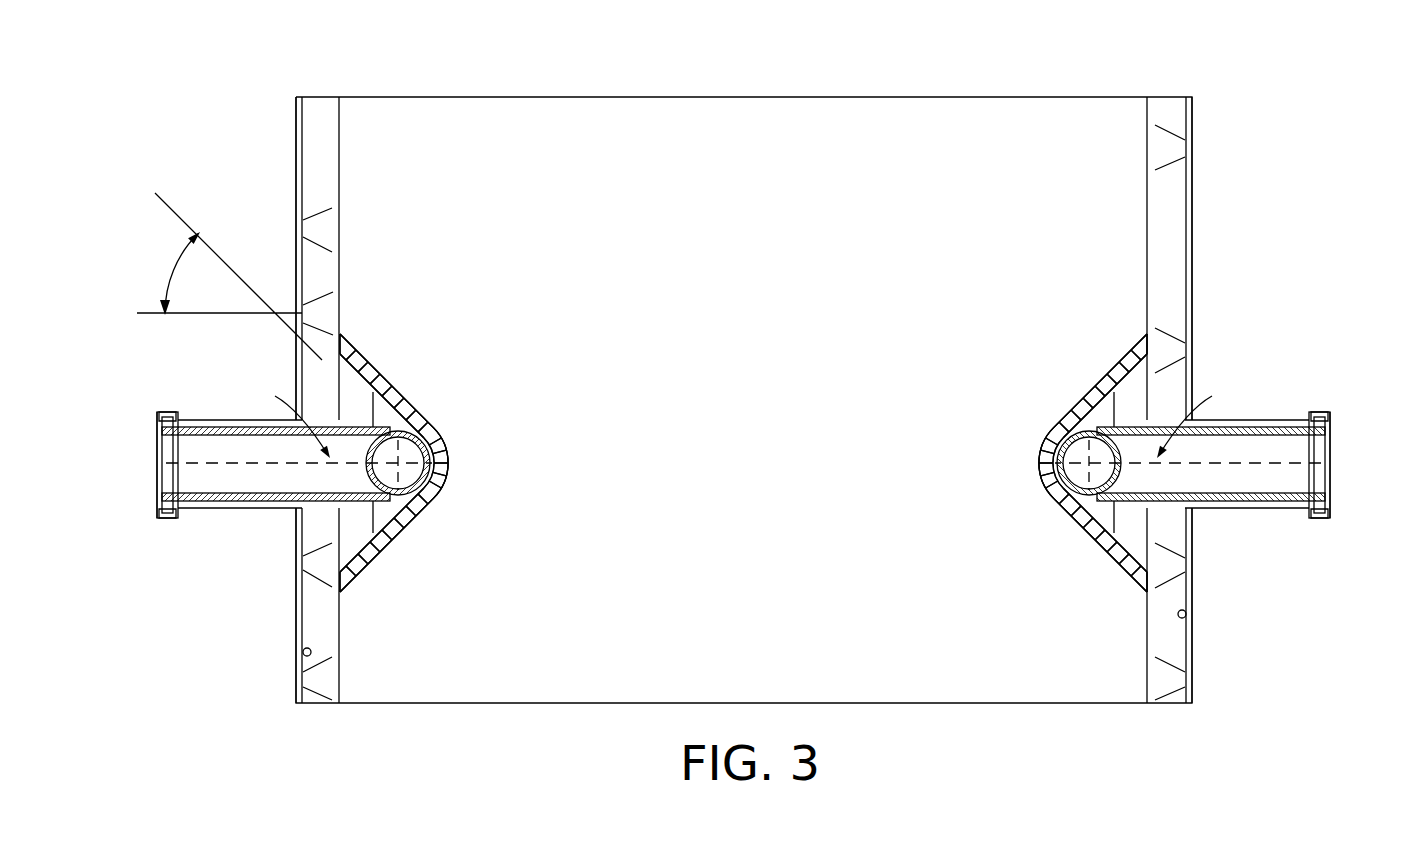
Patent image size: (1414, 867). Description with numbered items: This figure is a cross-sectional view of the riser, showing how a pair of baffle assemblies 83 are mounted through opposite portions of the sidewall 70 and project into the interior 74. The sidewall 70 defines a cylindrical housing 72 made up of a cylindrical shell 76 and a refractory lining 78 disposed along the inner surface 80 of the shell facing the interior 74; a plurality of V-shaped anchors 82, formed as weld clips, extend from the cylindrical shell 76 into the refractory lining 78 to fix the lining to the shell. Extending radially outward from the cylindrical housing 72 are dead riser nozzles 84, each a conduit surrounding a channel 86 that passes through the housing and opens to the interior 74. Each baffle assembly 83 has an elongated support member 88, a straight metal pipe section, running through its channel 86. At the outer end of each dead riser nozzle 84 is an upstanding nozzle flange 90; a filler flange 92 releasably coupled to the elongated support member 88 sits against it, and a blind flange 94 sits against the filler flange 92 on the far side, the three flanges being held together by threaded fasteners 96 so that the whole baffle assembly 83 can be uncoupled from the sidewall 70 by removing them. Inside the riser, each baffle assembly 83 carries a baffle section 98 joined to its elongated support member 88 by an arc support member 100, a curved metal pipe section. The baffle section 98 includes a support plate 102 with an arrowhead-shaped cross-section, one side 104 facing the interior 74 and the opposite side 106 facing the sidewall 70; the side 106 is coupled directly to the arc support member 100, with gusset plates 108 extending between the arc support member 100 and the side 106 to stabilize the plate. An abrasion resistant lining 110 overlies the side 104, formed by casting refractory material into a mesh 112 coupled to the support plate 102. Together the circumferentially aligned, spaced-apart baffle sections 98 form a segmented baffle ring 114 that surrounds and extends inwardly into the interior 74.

The sidewall 70 is at (313, 109).
The cylindrical housing 72 is at (1192, 155).
The interior 74 is at (774, 372).
The cylindrical shell 76 is at (297, 159).
The refractory lining 78 is at (316, 158).
The inner surface 80 is at (303, 652).
The anchors 82 is at (310, 220).
The baffle assembly 83 is at (450, 476).
The dead riser nozzle 84 is at (197, 420).
The channel 86 is at (744, 414).
The elongated support member 88 is at (247, 478).
The upstanding nozzle flange 90 is at (190, 518).
The filler flange 92 is at (175, 518).
The blind flange 94 is at (158, 441).
The threaded fasteners 96 is at (163, 414).
The baffle section 98 is at (407, 400).
The arc support member 100 is at (425, 510).
The support plate 102 is at (402, 385).
The side 104 is at (445, 440).
The side 106 is at (372, 535).
The gusset plates 108 is at (405, 388).
The abrasion resistant lining 110 is at (452, 465).
The mesh 112 is at (366, 352).
The segmented baffle ring 114 is at (345, 592).